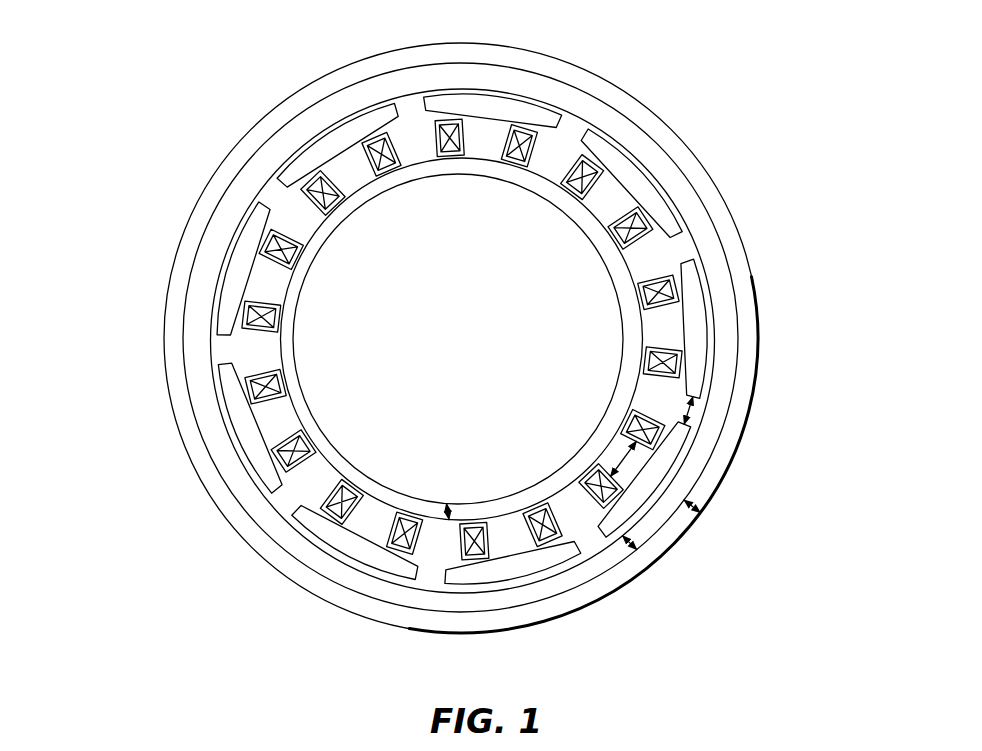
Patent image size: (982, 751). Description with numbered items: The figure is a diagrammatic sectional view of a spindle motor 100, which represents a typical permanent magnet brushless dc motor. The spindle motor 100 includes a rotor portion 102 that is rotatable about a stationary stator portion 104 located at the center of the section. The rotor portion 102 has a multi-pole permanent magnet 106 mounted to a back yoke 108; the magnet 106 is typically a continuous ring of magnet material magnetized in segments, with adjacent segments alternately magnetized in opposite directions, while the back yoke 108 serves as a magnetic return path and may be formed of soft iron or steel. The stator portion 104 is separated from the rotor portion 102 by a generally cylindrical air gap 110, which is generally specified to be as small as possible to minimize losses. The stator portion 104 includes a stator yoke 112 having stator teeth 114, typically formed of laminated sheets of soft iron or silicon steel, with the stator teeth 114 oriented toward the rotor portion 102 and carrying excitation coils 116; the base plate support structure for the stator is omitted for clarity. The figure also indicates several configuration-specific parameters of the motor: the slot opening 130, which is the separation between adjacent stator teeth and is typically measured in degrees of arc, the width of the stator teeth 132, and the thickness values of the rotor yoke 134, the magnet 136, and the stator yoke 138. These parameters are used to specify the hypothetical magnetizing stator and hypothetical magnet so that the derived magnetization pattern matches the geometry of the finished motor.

The spindle motor 100 is at (208, 84).
The rotor portion 102 is at (758, 266).
The stator portion 104 is at (314, 380).
The multi-pole permanent magnet 106 is at (657, 167).
The back yoke 108 is at (645, 122).
The air gap 110 is at (520, 98).
The stator yoke 112 is at (313, 248).
The stator teeth 114 is at (240, 275).
The excitation coils 116 is at (461, 158).
The slot opening 130 is at (690, 409).
The width of the stator teeth 132 is at (626, 460).
The thickness of the rotor yoke 134 is at (694, 507).
The thickness of the magnet 136 is at (632, 544).
The thickness of the stator yoke 138 is at (449, 511).